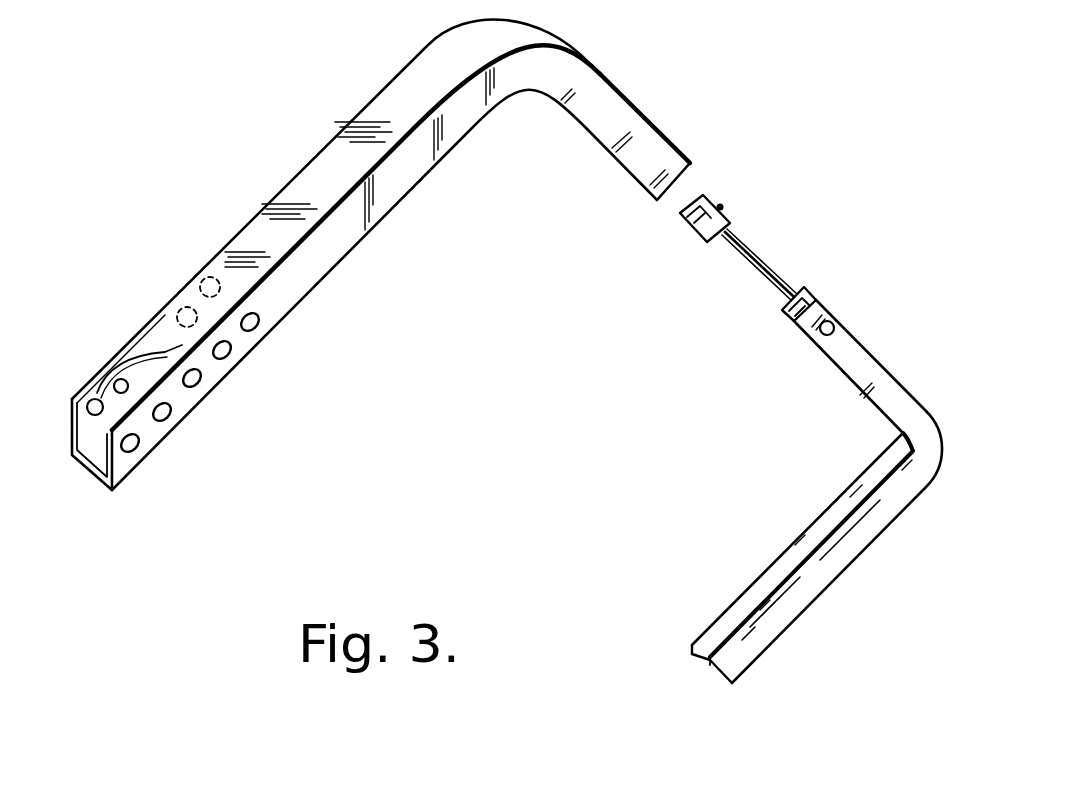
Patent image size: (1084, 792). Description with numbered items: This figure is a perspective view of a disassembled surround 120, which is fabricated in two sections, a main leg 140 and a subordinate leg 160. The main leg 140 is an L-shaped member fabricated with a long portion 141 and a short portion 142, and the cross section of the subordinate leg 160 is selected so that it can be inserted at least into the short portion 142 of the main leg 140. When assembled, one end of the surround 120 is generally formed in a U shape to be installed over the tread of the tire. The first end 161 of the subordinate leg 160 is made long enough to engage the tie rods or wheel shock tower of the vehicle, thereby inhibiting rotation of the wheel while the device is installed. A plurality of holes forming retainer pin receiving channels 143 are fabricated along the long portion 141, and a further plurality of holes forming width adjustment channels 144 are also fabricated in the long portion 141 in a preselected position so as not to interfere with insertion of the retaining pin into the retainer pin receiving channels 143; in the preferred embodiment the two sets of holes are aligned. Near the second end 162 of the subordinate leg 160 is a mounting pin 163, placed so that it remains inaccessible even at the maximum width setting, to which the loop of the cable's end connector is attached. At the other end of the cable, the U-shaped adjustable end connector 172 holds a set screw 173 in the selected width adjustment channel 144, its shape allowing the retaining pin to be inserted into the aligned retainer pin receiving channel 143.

The surround 120 is at (474, 310).
The main leg 140 is at (345, 128).
The long portion 141 is at (246, 226).
The short portion 142 is at (644, 114).
The retainer pin receiving channels 143 is at (253, 333).
The width adjustment channels 144 is at (198, 284).
The subordinate leg 160 is at (828, 497).
The first end 161 is at (752, 583).
The second end 162 is at (848, 380).
The mounting pin 163 is at (838, 322).
The adjustable end connector 172 is at (700, 241).
The set screw 173 is at (728, 206).